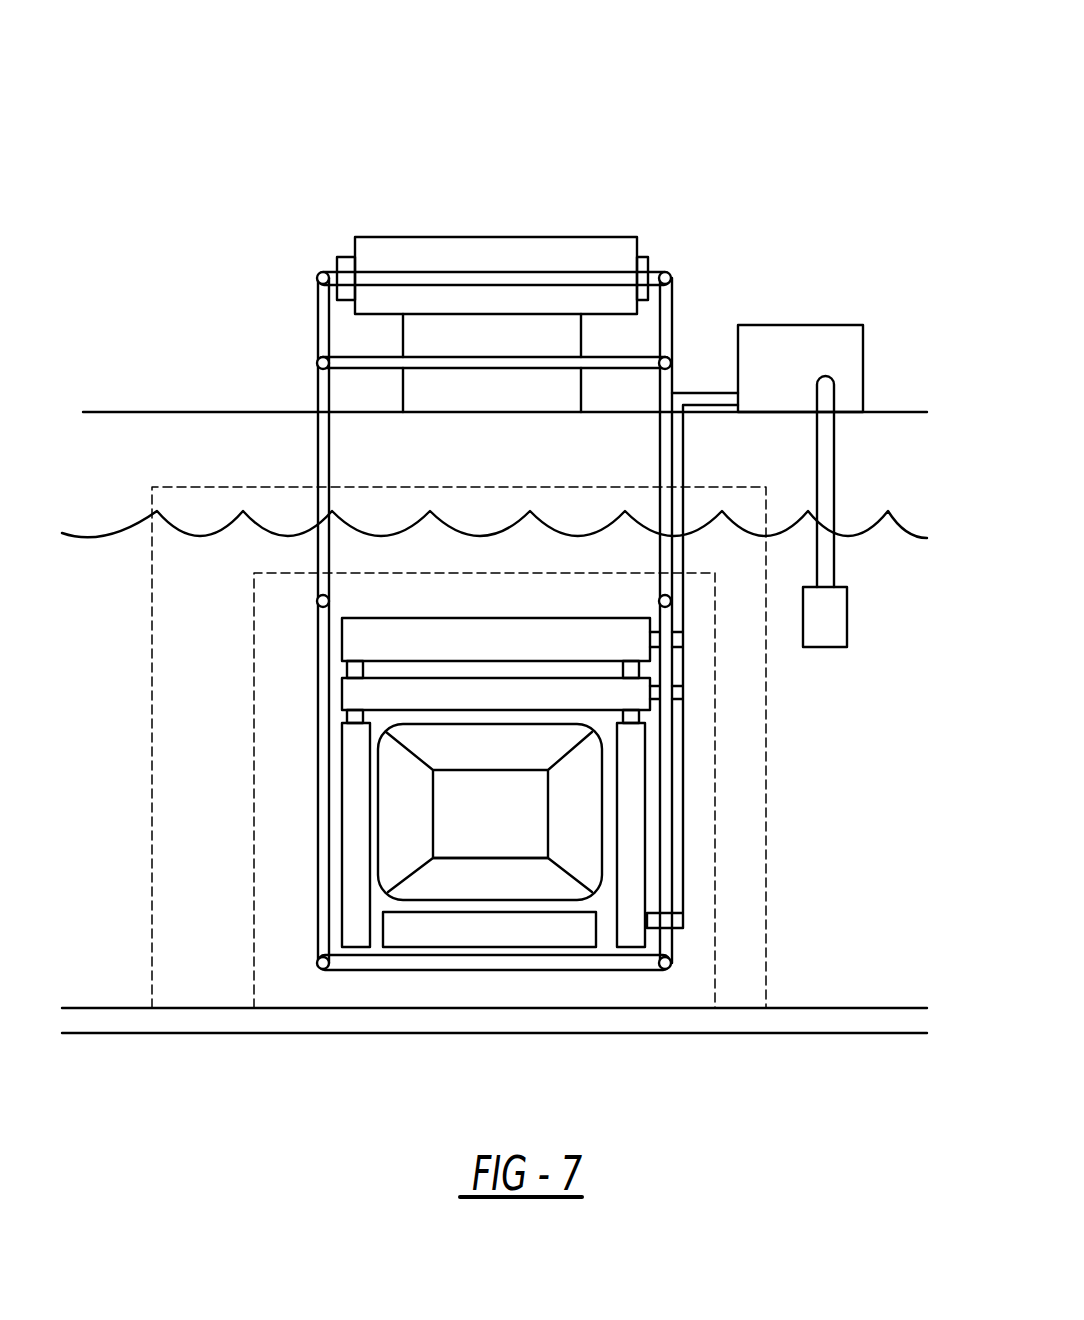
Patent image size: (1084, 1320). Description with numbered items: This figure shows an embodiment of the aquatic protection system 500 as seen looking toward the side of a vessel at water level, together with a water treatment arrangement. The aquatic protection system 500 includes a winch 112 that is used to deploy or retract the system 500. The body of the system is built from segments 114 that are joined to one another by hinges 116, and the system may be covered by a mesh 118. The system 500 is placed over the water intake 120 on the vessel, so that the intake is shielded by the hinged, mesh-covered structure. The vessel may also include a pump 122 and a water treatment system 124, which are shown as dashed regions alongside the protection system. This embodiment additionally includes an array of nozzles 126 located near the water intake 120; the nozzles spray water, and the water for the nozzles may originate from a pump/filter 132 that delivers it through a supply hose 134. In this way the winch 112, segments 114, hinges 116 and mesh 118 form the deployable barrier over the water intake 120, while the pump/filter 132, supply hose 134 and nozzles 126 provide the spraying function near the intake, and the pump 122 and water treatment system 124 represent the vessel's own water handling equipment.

The aquatic protection system 500 is at (595, 114).
The winch 112 is at (517, 238).
The segments 114 is at (317, 442).
The hinges 116 is at (318, 274).
The mesh 118 is at (472, 858).
The water intake 120 is at (527, 858).
The pump 122 is at (715, 872).
The water treatment system 124 is at (766, 768).
The array of nozzles 126 is at (355, 947).
The pump/filter 132 is at (863, 335).
The supply hose 134 is at (834, 437).